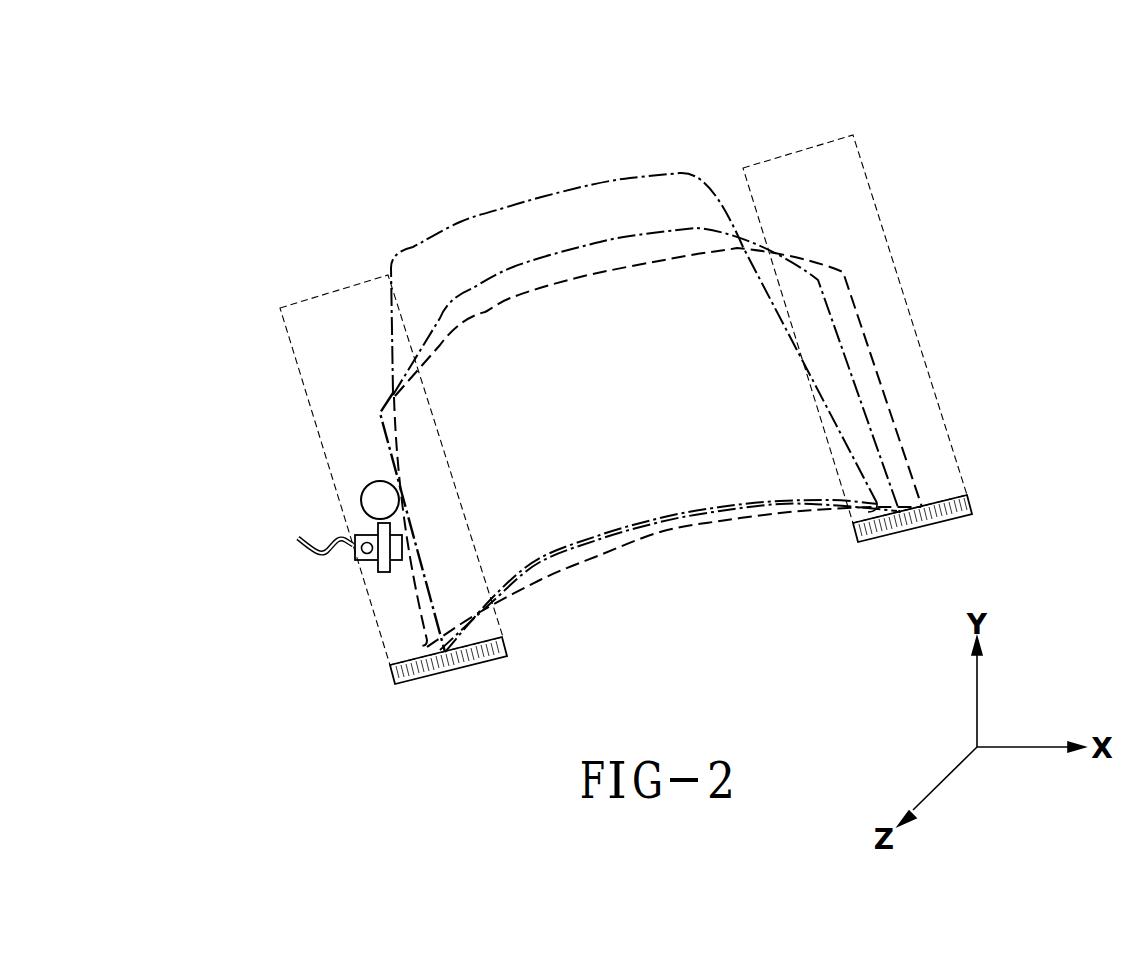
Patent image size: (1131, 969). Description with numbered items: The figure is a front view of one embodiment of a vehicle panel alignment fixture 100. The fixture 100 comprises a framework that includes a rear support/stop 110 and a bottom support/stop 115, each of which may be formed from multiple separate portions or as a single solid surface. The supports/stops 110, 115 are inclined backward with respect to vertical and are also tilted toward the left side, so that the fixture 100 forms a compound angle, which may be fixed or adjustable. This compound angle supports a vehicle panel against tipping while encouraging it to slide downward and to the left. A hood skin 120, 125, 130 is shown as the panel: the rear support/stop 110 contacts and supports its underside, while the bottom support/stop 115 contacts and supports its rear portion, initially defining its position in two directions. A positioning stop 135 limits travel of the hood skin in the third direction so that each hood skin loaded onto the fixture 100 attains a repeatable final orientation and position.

The alignment fixture 100 is at (979, 151).
The rear support/stop 110 is at (295, 358).
The bottom support/stop 115 is at (427, 678).
The hood skin 120 is at (520, 307).
The hood skin 125 is at (547, 258).
The hood skin 130 is at (507, 211).
The positioning stop 135 is at (380, 502).